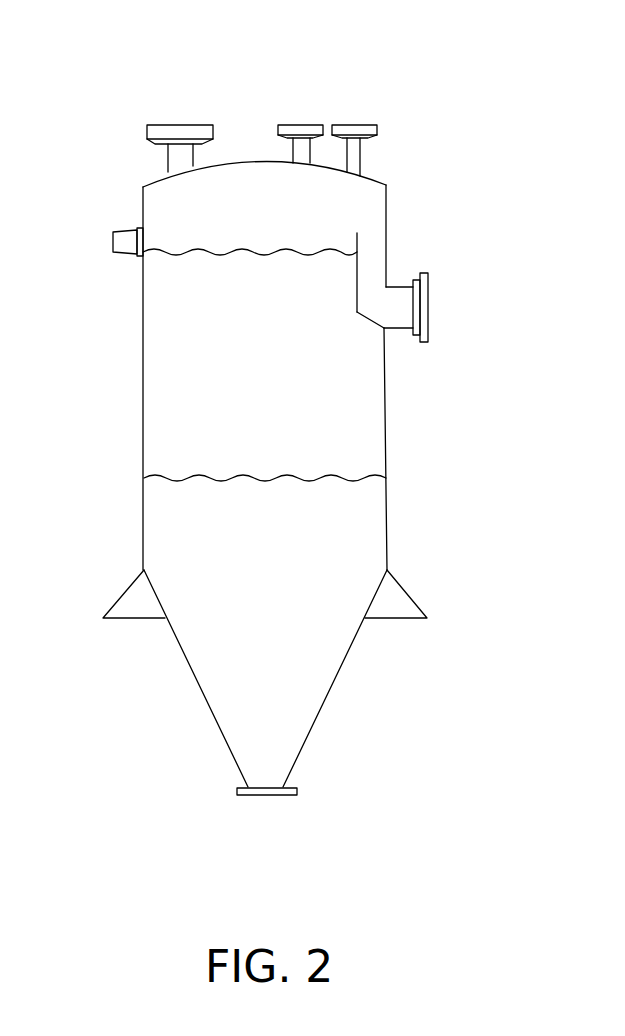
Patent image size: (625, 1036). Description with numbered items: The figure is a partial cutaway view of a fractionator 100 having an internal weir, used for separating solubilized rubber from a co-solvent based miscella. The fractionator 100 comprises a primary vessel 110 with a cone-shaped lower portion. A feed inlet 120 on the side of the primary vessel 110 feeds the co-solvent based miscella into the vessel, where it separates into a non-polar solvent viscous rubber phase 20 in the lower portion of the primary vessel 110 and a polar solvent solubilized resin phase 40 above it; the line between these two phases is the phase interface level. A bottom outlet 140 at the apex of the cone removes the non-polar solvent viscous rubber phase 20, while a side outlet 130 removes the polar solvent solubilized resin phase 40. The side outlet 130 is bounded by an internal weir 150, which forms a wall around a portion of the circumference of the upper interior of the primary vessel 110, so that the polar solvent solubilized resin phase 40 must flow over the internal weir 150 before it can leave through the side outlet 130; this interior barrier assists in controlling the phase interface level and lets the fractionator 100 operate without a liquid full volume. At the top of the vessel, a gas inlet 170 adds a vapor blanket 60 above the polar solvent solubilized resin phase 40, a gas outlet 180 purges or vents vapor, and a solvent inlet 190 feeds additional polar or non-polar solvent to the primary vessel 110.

The fractionator 100 is at (338, 402).
The primary vessel 110 is at (387, 510).
The feed inlet 120 is at (113, 238).
The side outlet 130 is at (428, 305).
The bottom outlet 140 is at (265, 796).
The internal weir 150 is at (358, 246).
The gas inlet 170 is at (362, 155).
The gas outlet 180 is at (302, 125).
The solvent inlet 190 is at (167, 164).
The non-polar solvent viscous rubber phase 20 is at (287, 603).
The polar solvent solubilized resin phase 40 is at (285, 393).
The vapor blanket 60 is at (283, 227).